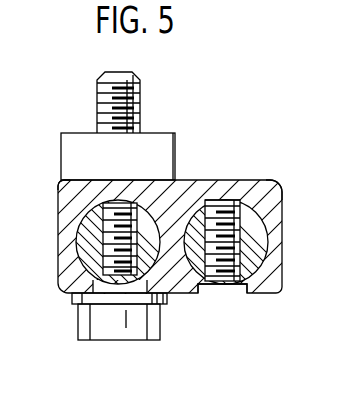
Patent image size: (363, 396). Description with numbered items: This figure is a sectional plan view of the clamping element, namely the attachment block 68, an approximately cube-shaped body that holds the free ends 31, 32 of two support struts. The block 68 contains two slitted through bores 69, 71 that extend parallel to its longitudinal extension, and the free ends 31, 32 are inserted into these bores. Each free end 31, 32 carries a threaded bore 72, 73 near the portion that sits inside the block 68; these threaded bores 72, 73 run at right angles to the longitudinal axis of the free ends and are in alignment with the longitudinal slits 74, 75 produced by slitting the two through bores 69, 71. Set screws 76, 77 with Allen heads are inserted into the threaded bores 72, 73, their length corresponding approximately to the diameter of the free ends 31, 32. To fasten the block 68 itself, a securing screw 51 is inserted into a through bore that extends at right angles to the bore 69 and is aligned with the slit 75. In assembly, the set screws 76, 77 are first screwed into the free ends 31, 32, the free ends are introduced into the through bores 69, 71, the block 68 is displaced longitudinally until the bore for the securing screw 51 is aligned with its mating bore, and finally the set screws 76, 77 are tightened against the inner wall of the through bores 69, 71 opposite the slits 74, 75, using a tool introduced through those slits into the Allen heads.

The securing screw 51 is at (141, 84).
The slitted through bore 69 is at (185, 180).
The set screw 77 is at (244, 197).
The slitted through bore 71 is at (283, 188).
The attachment block 68 is at (273, 210).
The set screw 76 is at (61, 187).
The threaded bore 72 is at (101, 241).
The threaded bore 73 is at (248, 241).
The free end 31 is at (86, 256).
The free end 32 is at (248, 261).
The longitudinal slit 75 is at (97, 309).
The longitudinal slit 74 is at (200, 287).